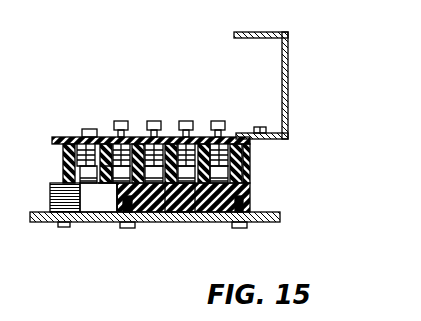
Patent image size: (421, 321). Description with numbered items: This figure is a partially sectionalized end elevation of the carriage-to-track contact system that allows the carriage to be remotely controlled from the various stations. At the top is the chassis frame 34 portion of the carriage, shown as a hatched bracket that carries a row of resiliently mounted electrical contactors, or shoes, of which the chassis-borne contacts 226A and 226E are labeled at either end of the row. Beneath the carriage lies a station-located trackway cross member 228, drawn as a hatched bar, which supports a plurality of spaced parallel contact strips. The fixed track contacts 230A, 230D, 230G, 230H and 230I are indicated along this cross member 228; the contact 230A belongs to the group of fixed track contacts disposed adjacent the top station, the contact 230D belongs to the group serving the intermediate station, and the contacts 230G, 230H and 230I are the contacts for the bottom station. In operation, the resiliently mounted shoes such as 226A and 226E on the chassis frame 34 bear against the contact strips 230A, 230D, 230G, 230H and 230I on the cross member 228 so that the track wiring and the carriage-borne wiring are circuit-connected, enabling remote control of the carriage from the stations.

The chassis frame 34 is at (289, 88).
The chassis-borne contact 226A is at (85, 176).
The chassis-borne contact 226E is at (229, 177).
The trackway cross member 228 is at (266, 214).
The fixed track contact 230A is at (70, 185).
The fixed track contact 230D is at (112, 186).
The fixed track contact 230G is at (157, 205).
The fixed track contact 230H is at (185, 203).
The fixed track contact 230I is at (224, 210).